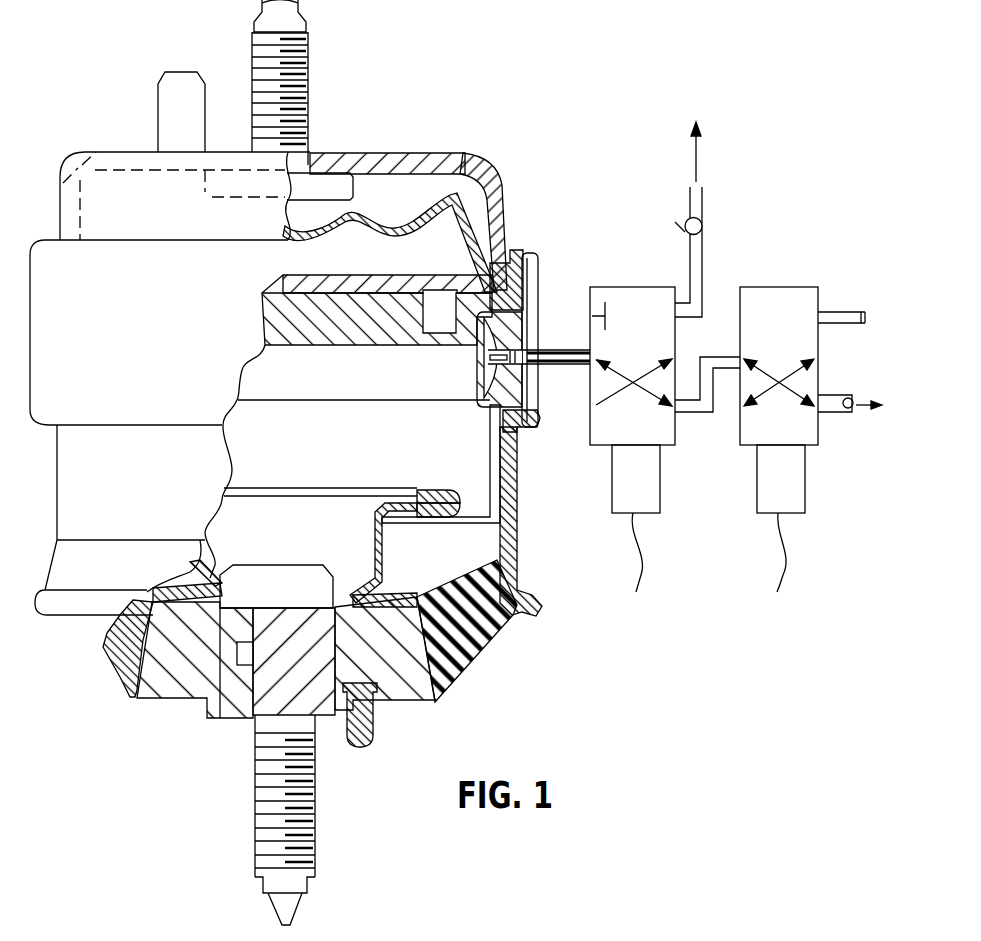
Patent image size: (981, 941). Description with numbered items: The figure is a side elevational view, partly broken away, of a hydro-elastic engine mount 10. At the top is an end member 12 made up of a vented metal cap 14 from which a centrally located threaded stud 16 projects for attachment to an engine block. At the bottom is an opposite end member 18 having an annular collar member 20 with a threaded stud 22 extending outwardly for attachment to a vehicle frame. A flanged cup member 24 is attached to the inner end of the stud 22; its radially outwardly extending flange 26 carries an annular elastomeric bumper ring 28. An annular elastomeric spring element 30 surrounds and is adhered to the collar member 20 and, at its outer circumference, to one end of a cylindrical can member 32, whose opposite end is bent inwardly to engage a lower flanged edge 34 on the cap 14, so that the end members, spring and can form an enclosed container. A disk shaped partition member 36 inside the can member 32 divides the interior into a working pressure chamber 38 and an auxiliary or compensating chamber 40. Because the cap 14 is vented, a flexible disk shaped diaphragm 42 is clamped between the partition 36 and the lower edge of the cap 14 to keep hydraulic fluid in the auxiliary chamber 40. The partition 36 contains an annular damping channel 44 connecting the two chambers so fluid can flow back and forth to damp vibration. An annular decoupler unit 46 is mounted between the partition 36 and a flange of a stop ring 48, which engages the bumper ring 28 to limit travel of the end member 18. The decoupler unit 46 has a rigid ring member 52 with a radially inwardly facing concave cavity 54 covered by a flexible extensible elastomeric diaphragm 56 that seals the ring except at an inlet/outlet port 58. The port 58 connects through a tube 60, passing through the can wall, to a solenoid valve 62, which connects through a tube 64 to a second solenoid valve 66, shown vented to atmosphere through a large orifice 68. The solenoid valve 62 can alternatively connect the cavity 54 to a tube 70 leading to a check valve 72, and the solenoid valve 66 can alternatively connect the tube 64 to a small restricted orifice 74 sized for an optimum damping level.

The hydro-elastic engine mount 10 is at (410, 96).
The end member 12 is at (328, 156).
The vented metal cap 14 is at (396, 154).
The threaded stud 16 is at (310, 73).
The opposite end member 18 is at (220, 713).
The annular collar member 20 is at (410, 707).
The threaded stud 22 is at (317, 797).
The flanged cup member 24 is at (387, 535).
The flange 26 is at (432, 497).
The annular elastomeric bumper ring 28 is at (447, 498).
The annular elastomeric spring element 30 is at (487, 653).
The can member 32 is at (527, 571).
The lower flanged edge 34 is at (520, 268).
The partition member 36 is at (385, 275).
The pressure chamber 38 is at (253, 453).
The auxiliary chamber 40 is at (447, 223).
The flexible diaphragm 42 is at (453, 196).
The annular damping channel 44 is at (452, 288).
The decoupler unit 46 is at (463, 389).
The stop ring 48 is at (487, 527).
The rigid ring member 52 is at (538, 310).
The annular concave cavity 54 is at (478, 346).
The elastomeric diaphragm 56 is at (473, 373).
The inlet/outlet port 58 is at (557, 365).
The tube 60 is at (569, 346).
The solenoid valve 62 is at (662, 484).
The tube 64 is at (720, 355).
The solenoid valve 66 is at (805, 484).
The large orifice 68 is at (832, 395).
The tube 70 is at (703, 255).
The check valve 72 is at (700, 227).
The restricted orifice 74 is at (842, 310).